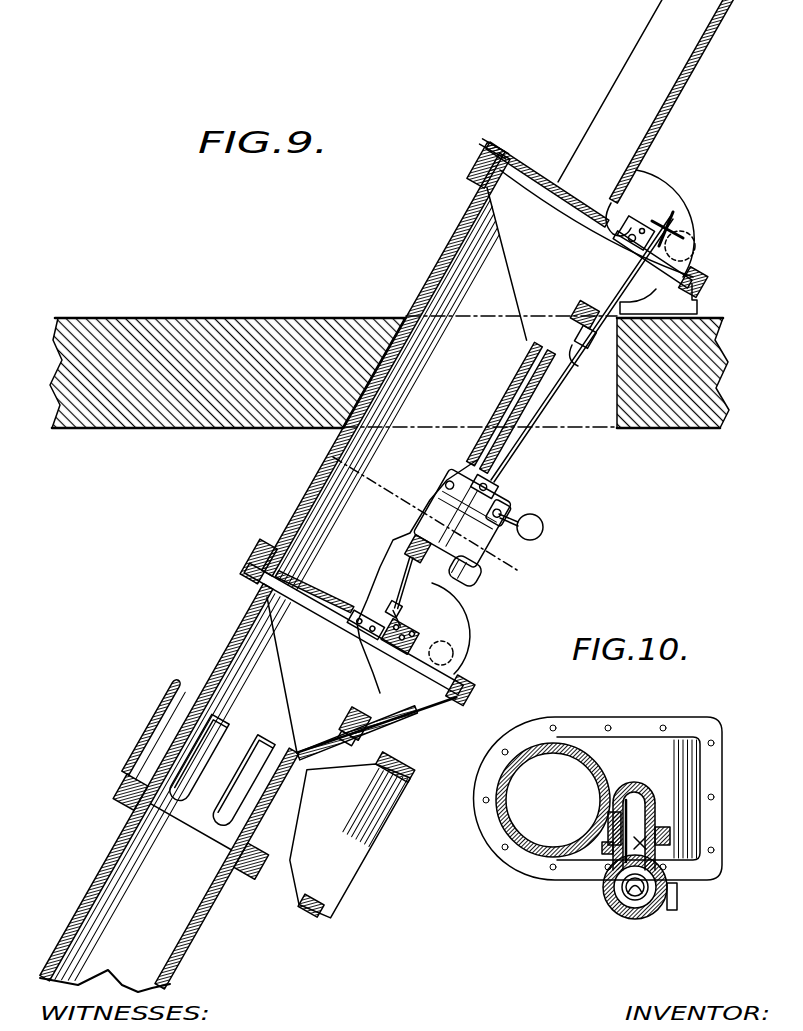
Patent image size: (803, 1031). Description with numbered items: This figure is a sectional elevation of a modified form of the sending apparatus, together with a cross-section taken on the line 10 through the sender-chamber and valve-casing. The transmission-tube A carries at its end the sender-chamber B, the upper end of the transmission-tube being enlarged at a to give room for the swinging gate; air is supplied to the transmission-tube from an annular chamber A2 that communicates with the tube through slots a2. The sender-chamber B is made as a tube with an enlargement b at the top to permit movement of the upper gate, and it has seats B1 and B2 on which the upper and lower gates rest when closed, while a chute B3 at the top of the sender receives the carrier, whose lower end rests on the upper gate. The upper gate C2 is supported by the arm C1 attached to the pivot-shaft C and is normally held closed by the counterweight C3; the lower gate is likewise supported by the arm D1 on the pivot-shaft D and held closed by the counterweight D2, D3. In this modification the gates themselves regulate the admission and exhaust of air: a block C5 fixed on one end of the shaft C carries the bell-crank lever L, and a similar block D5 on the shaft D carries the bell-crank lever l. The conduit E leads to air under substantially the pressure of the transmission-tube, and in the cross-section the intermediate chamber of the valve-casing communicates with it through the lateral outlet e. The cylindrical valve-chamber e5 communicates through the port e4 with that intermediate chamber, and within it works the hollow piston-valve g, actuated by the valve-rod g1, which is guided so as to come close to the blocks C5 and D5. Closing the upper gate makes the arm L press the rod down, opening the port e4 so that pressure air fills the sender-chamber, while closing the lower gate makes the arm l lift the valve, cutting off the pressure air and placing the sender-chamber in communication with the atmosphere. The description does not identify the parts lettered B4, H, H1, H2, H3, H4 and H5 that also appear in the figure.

In FIG. 9, the transmission-tube A is at (128, 943).
In FIG. 9, the annular chamber A2 is at (143, 740).
In FIG. 9, the slots a2 is at (220, 769).
In FIG. 9, the enlargement of the transmission-tube a is at (360, 708).
In FIG. 9, the sender-chamber B is at (438, 394).
In FIG. 10, the sender-chamber B is at (553, 800).
In FIG. 9, the seat B1 is at (523, 170).
In FIG. 9, the seat B2 is at (310, 587).
In FIG. 9, the chute B3 is at (648, 118).
In FIG. 10, the housing B4 is at (656, 780).
In FIG. 9, the pivot-shaft C is at (634, 226).
In FIG. 9, the arm C1 is at (583, 222).
In FIG. 9, the upper gate C2 is at (536, 182).
In FIG. 9, the counterweight C3 is at (680, 250).
In FIG. 9, the block C5 is at (662, 226).
In FIG. 9, the hub H is at (680, 240).
In FIG. 9, the bell-crank lever L is at (582, 349).
In FIG. 9, the enlargement of the sender-chamber b is at (582, 302).
In FIG. 9, the valve-rod g1 is at (576, 356).
In FIG. 9, the conduit E is at (514, 398).
In FIG. 10, the conduit E is at (618, 800).
In FIG. 9, the section line 10 is at (333, 457).
In FIG. 9, the link block H1 is at (390, 608).
In FIG. 9, the bracket H2 is at (495, 481).
In FIG. 9, the lever arm H3 is at (509, 515).
In FIG. 9, the pivot H4 is at (507, 497).
In FIG. 9, the ball weight H5 is at (536, 527).
In FIG. 10, the lateral outlet e is at (636, 836).
In FIG. 10, the port e4 is at (626, 889).
In FIG. 9, the cylindrical valve-chamber e5 is at (470, 568).
In FIG. 10, the cylindrical valve-chamber e5 is at (678, 897).
In FIG. 9, the bell-crank lever l is at (405, 591).
In FIG. 9, the pivot-shaft D is at (414, 637).
In FIG. 9, the arm D1 is at (343, 623).
In FIG. 9, the counterweight D2 is at (297, 585).
In FIG. 9, the counterweight D3 is at (458, 650).
In FIG. 9, the block D5 is at (441, 641).
In FIG. 10, the hollow piston-valve g is at (637, 905).